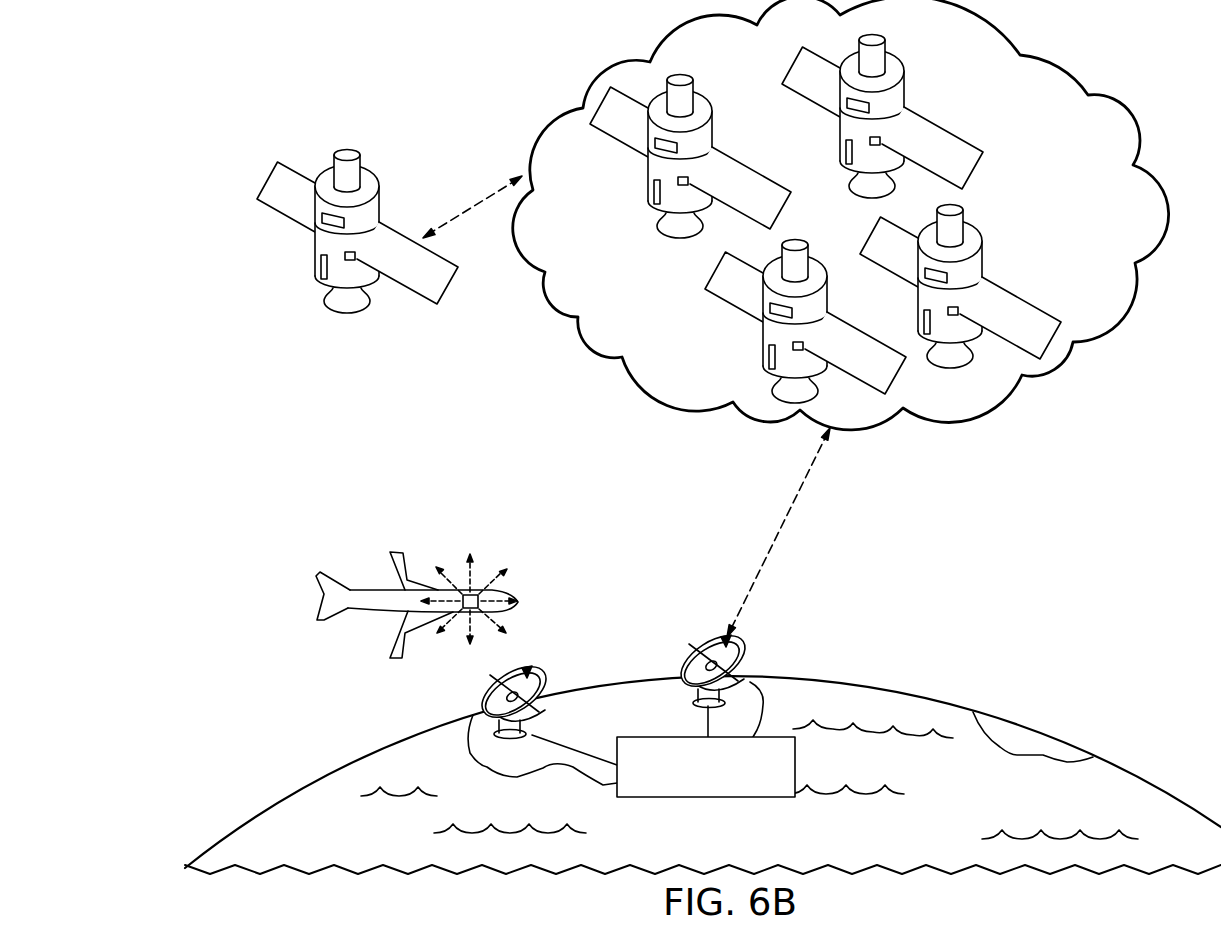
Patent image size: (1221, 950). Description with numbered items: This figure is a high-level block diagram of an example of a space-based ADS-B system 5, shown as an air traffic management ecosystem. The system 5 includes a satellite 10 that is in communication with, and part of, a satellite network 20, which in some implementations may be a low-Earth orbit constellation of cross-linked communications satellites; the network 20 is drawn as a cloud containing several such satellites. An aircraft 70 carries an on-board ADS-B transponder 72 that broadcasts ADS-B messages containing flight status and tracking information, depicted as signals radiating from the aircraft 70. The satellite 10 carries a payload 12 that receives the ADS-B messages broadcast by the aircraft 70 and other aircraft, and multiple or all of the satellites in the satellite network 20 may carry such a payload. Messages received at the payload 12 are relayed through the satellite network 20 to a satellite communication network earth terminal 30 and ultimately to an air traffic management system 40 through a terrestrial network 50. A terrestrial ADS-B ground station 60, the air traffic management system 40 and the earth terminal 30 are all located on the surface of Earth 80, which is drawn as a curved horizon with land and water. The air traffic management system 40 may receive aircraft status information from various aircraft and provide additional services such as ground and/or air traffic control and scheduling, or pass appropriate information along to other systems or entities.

The space-based ADS-B system 5 is at (175, 115).
The satellite 10 is at (267, 182).
The payload 12 is at (332, 212).
The satellite network 20 is at (1104, 97).
The satellite communication network earth terminal 30 is at (745, 662).
The air traffic management system 40 is at (708, 797).
The terrestrial network 50 is at (707, 726).
The terrestrial ADS-B ground station 60 is at (545, 703).
The aircraft 70 is at (367, 590).
The ADS-B transponder 72 is at (476, 592).
The Earth 80 is at (955, 703).